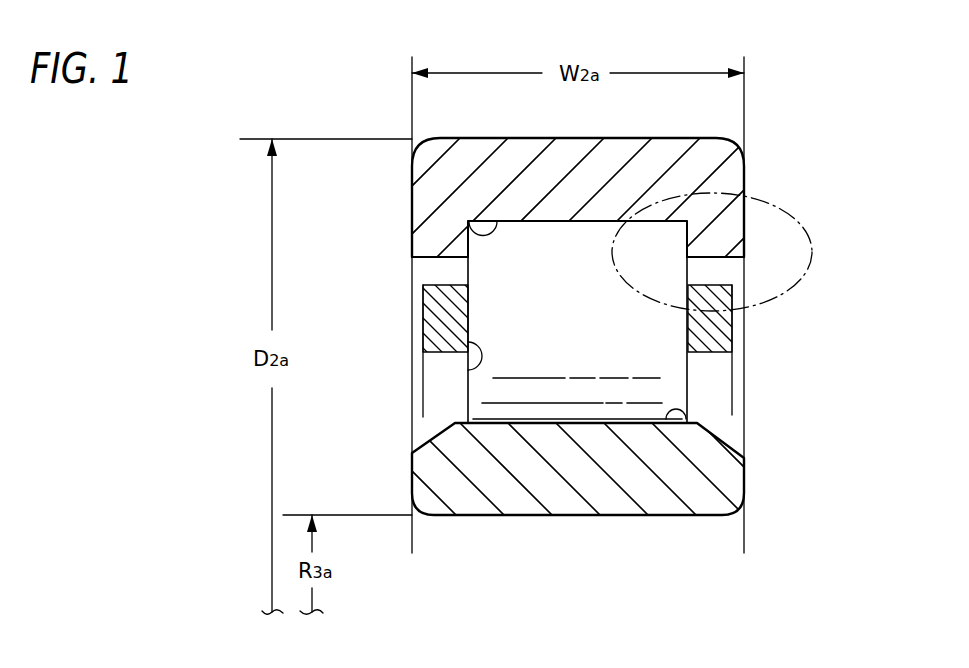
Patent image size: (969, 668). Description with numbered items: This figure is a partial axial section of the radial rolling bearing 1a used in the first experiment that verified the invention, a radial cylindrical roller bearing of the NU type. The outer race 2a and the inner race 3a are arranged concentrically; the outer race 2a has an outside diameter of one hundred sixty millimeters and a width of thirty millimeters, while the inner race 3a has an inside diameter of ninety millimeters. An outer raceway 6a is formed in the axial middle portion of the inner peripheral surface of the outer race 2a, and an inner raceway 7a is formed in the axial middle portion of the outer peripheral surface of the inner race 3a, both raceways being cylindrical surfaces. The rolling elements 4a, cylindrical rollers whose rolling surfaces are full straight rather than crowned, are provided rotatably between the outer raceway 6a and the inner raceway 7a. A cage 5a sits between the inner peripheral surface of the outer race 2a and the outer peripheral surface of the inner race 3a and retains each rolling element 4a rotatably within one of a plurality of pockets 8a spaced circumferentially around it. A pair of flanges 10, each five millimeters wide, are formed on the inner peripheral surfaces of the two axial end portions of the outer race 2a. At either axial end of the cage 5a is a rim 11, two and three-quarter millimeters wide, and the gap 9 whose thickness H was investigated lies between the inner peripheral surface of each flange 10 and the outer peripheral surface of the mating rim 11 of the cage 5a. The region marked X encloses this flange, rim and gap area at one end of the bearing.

The radial rolling bearing 1a is at (766, 118).
The outer race 2a is at (733, 165).
The inner race 3a is at (717, 497).
The rolling elements 4a is at (677, 388).
The cage 5a is at (715, 343).
The outer raceway 6a is at (468, 235).
The inner raceway 7a is at (687, 406).
The pockets 8a is at (468, 357).
The gap 9 is at (437, 272).
The flanges 10 is at (437, 241).
The rim 11 is at (437, 323).
The enlarged region X is at (788, 208).